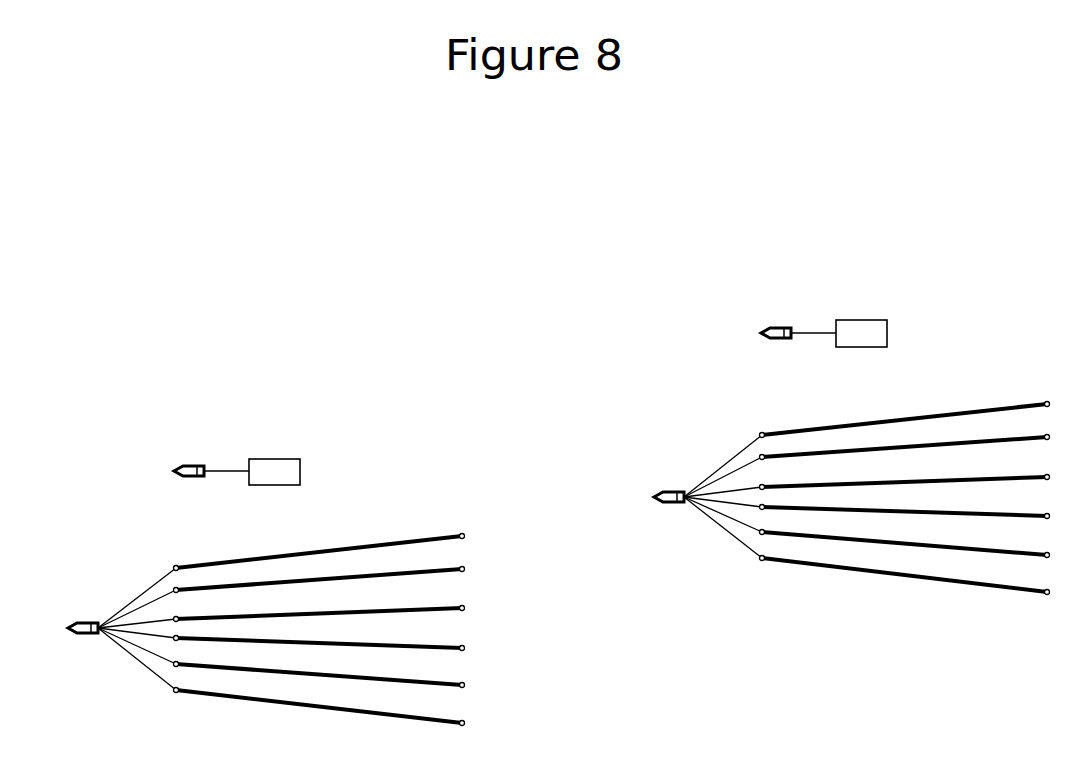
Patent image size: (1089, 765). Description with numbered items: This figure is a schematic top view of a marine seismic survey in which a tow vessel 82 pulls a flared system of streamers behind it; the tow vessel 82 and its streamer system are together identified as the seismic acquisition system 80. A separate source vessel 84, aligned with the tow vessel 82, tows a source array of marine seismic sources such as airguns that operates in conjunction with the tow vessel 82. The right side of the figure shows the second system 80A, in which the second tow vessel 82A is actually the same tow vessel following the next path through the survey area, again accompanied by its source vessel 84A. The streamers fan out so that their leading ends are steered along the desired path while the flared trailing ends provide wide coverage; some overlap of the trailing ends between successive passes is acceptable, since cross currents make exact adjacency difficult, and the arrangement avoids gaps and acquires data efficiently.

The seismic acquisition system 80 is at (350, 358).
The second system 80A is at (912, 288).
The tow vessel 82 is at (88, 634).
The second tow vessel 82A is at (667, 505).
The source vessel 84 is at (186, 462).
The source vessel 84A is at (768, 338).